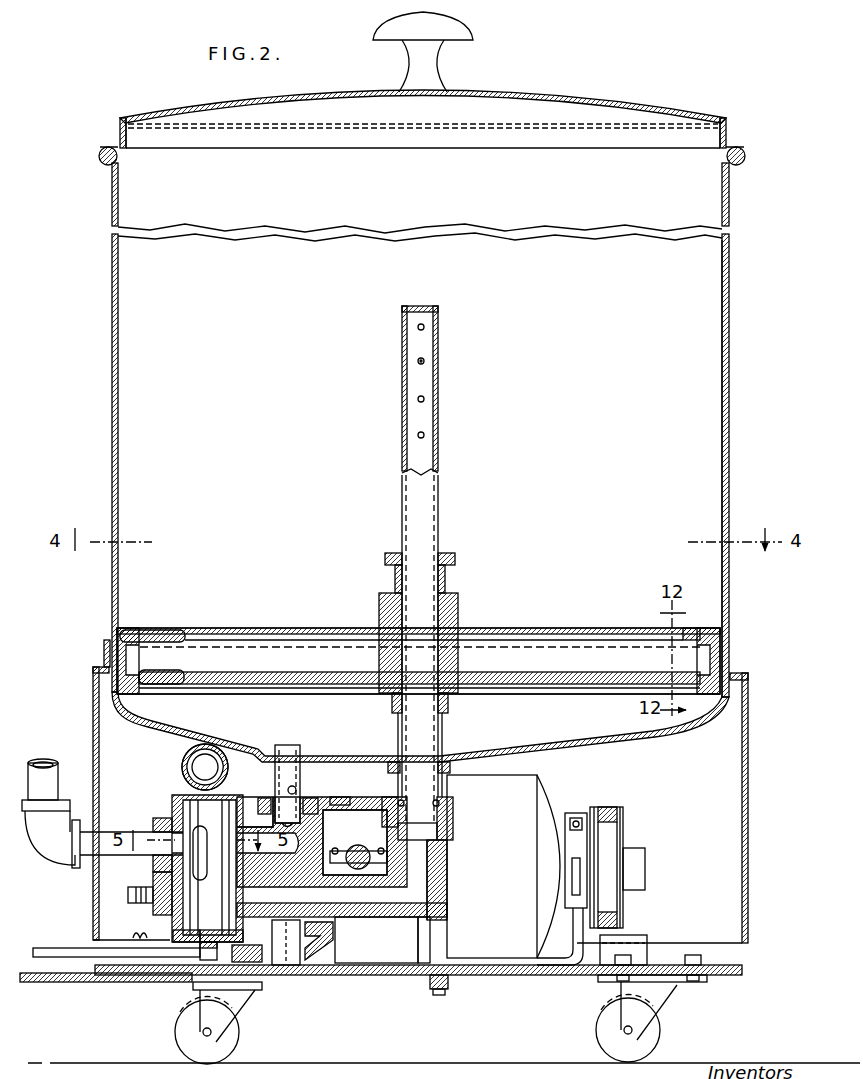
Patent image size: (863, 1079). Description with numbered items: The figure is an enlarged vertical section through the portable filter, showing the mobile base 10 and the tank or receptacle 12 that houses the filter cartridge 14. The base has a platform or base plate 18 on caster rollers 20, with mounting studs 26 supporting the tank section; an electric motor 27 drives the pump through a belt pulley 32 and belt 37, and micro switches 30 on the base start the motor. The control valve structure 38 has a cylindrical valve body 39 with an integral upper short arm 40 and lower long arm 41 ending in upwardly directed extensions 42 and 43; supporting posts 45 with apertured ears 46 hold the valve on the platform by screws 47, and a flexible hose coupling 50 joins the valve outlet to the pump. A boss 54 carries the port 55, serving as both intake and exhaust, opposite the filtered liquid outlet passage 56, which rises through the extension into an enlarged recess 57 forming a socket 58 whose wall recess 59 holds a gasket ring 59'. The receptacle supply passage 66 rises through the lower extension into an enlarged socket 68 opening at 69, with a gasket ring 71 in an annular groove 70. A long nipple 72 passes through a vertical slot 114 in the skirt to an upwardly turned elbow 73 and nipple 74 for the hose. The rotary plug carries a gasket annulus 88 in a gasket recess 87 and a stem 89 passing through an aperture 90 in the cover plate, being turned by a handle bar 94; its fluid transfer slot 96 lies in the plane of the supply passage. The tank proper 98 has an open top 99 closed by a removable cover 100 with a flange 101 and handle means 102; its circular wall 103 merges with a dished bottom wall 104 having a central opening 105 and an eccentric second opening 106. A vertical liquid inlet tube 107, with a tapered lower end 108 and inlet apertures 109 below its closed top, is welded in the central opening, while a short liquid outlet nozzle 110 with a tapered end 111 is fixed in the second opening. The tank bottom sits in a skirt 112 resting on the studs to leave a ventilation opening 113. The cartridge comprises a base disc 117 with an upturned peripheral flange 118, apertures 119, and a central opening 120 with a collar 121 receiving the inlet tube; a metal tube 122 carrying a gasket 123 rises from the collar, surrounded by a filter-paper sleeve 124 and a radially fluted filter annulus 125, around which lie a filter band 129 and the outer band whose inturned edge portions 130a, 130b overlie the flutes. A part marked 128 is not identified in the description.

The mobile base 10 is at (753, 960).
The receptacle or tank 12 is at (730, 111).
The filter cartridge 14 is at (180, 626).
The platform or base plate 18 is at (546, 970).
The caster rollers 20 is at (649, 1036).
The mounting studs 26 is at (641, 951).
The electric motor 27 is at (555, 806).
The micro switches 30 is at (132, 923).
The belt pulley 32 is at (626, 822).
The belt 37 is at (607, 812).
The control valve structure 38 is at (179, 792).
The valve body 39 is at (170, 933).
The upper short arm 40 is at (248, 818).
The lower long arm 41 is at (399, 932).
The upwardly directed extension 42 is at (333, 809).
The upwardly directed extension 43 is at (449, 855).
The supporting posts 45 is at (456, 935).
The apertured ears 46 is at (450, 985).
The bolts or screws 47 is at (439, 995).
The flexible hose coupling 50 is at (206, 754).
The boss 54 is at (160, 856).
The port 55 is at (183, 857).
The filtered liquid outlet passage 56 is at (291, 851).
The enlarged recess 57 is at (321, 820).
The socket 58 is at (301, 799).
The recess 59 is at (354, 767).
The gasket ring 59' is at (287, 758).
The receptacle supply passage 66 is at (376, 901).
The enlarged socket 68 is at (441, 831).
The opening 69 is at (439, 805).
The annular groove 70 is at (455, 800).
The gasket ring 71 is at (449, 815).
The nipple 72 is at (88, 833).
The elbow 73 is at (57, 852).
The nipple 74 is at (39, 774).
The gasket recess 87 is at (181, 933).
The gasket annulus 88 is at (233, 932).
The stem 89 is at (190, 986).
The aperture 90 is at (180, 944).
The handle bar 94 is at (62, 957).
The fluid transfer slot 96 is at (205, 896).
The tank proper 98 is at (731, 405).
The open top 99 is at (621, 146).
The removable cover 100 is at (541, 92).
The flange 101 is at (748, 153).
The handle means 102 is at (466, 31).
The circular wall 103 is at (731, 467).
The bottom wall 104 is at (708, 714).
The central opening 105 is at (438, 755).
The second opening 106 is at (309, 757).
The vertical liquid inlet tube 107 is at (426, 497).
The tapered lower end portion 108 is at (446, 869).
The inlet apertures 109 is at (437, 356).
The liquid outlet nozzle 110 is at (294, 772).
The tapered lower end 111 is at (329, 831).
The circular wall or skirt 112 is at (748, 824).
The ventilation opening 113 is at (711, 952).
The vertical slot 114 is at (96, 881).
The base disc 117 is at (573, 681).
The upturned peripheral flange 118 is at (702, 657).
The apertures 119 is at (192, 681).
The opening 120 is at (455, 664).
The collar 121 is at (475, 694).
The metal tube 122 is at (447, 580).
The gasket 123 is at (441, 552).
The upstanding sleeve 124 is at (379, 598).
The radially fluted filter annulus 125 is at (314, 654).
The step block 128 is at (612, 664).
The band of filter material 129 is at (420, 654).
The upper inturned edge portion 130a is at (134, 634).
The lower inturned edge portion 130b is at (154, 678).